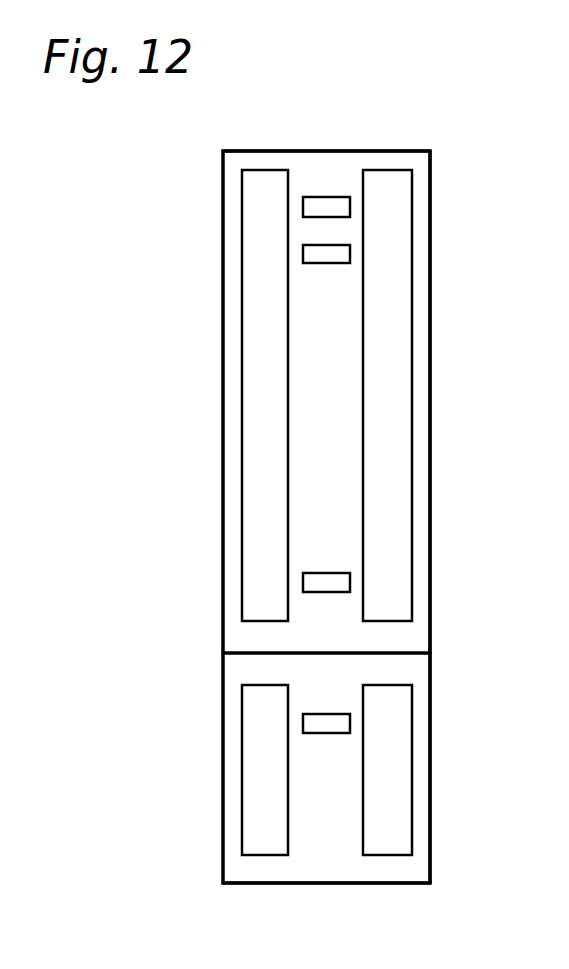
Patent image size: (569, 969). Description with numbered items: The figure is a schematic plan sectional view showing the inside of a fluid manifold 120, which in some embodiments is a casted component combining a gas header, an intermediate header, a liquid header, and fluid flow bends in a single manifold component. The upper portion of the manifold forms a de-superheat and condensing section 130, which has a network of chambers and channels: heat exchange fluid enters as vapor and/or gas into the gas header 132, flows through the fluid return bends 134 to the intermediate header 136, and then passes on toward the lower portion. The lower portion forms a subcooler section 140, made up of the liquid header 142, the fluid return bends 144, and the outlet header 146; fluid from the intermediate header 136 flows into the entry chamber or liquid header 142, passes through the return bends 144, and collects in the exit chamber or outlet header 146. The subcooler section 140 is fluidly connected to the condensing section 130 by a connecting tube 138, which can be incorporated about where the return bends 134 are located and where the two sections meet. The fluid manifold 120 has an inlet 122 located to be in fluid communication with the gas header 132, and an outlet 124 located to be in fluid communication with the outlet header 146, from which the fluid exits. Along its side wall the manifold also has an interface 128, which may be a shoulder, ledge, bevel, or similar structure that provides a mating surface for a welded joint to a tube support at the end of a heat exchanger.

The fluid manifold 120 is at (168, 212).
The inlet 122 is at (410, 212).
The outlet 124 is at (243, 803).
The interface 128 is at (432, 347).
The de-superheat and condensing section 130 is at (332, 165).
The gas header 132 is at (390, 273).
The fluid return bends 134 is at (320, 265).
The intermediate header 136 is at (260, 343).
The connecting tube 138 is at (328, 572).
The subcooler section 140 is at (322, 865).
The liquid header 142 is at (397, 735).
The fluid return bends 144 is at (327, 735).
The outlet header 146 is at (263, 742).